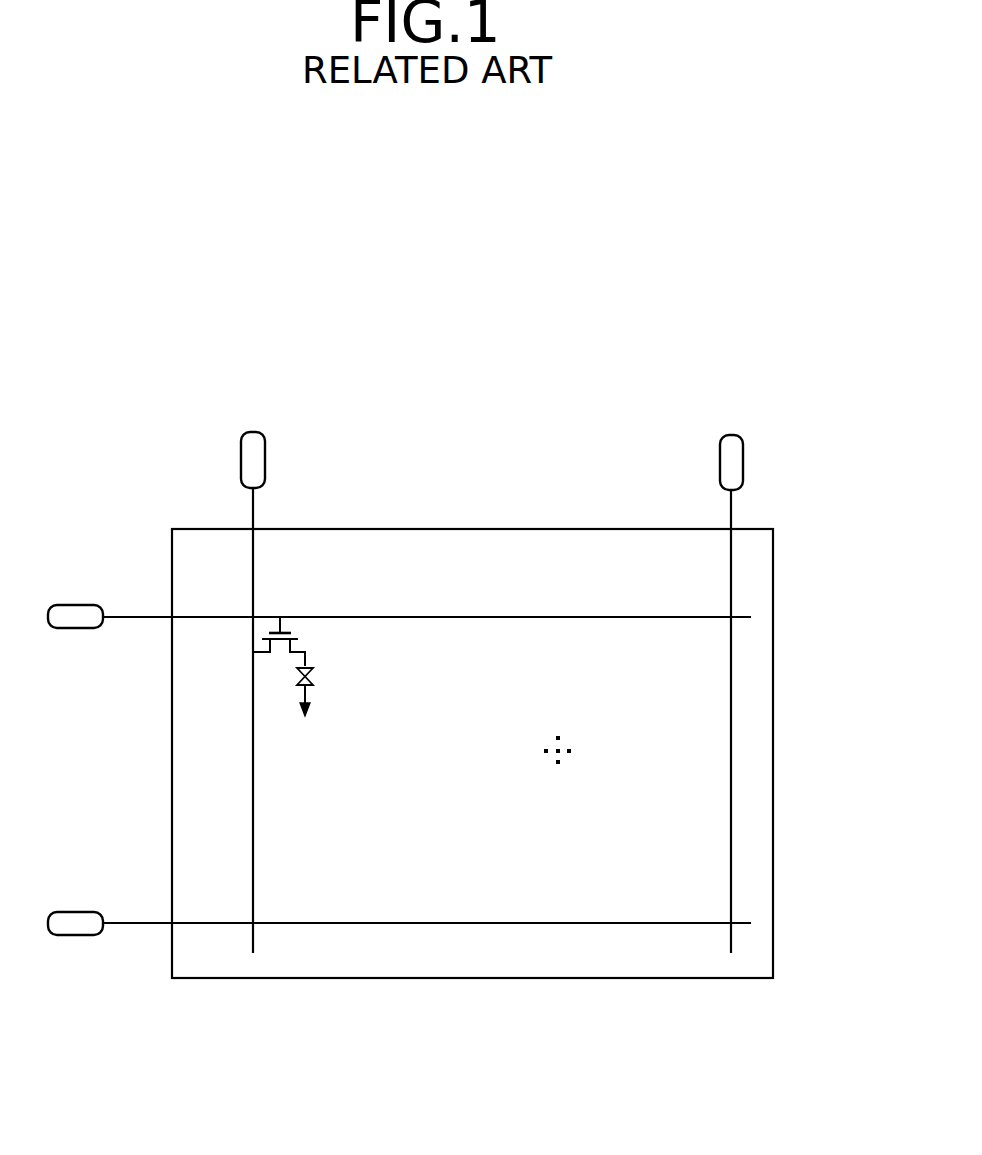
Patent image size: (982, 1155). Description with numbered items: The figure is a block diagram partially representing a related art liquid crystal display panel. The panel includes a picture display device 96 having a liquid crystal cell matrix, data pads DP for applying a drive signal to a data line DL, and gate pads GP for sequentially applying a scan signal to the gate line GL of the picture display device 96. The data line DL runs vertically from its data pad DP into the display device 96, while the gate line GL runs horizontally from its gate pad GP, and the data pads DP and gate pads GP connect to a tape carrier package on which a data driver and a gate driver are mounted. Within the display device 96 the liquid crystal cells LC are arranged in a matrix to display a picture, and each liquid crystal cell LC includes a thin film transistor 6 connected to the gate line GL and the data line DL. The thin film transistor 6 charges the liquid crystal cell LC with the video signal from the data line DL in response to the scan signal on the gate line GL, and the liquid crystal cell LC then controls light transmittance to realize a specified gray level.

The picture display device 96 is at (774, 567).
The data line DL is at (254, 505).
The data pads DP is at (735, 455).
The gate pads GP is at (75, 606).
The gate line GL is at (138, 619).
The thin film transistor 6 is at (310, 633).
The liquid crystal cell LC is at (328, 692).